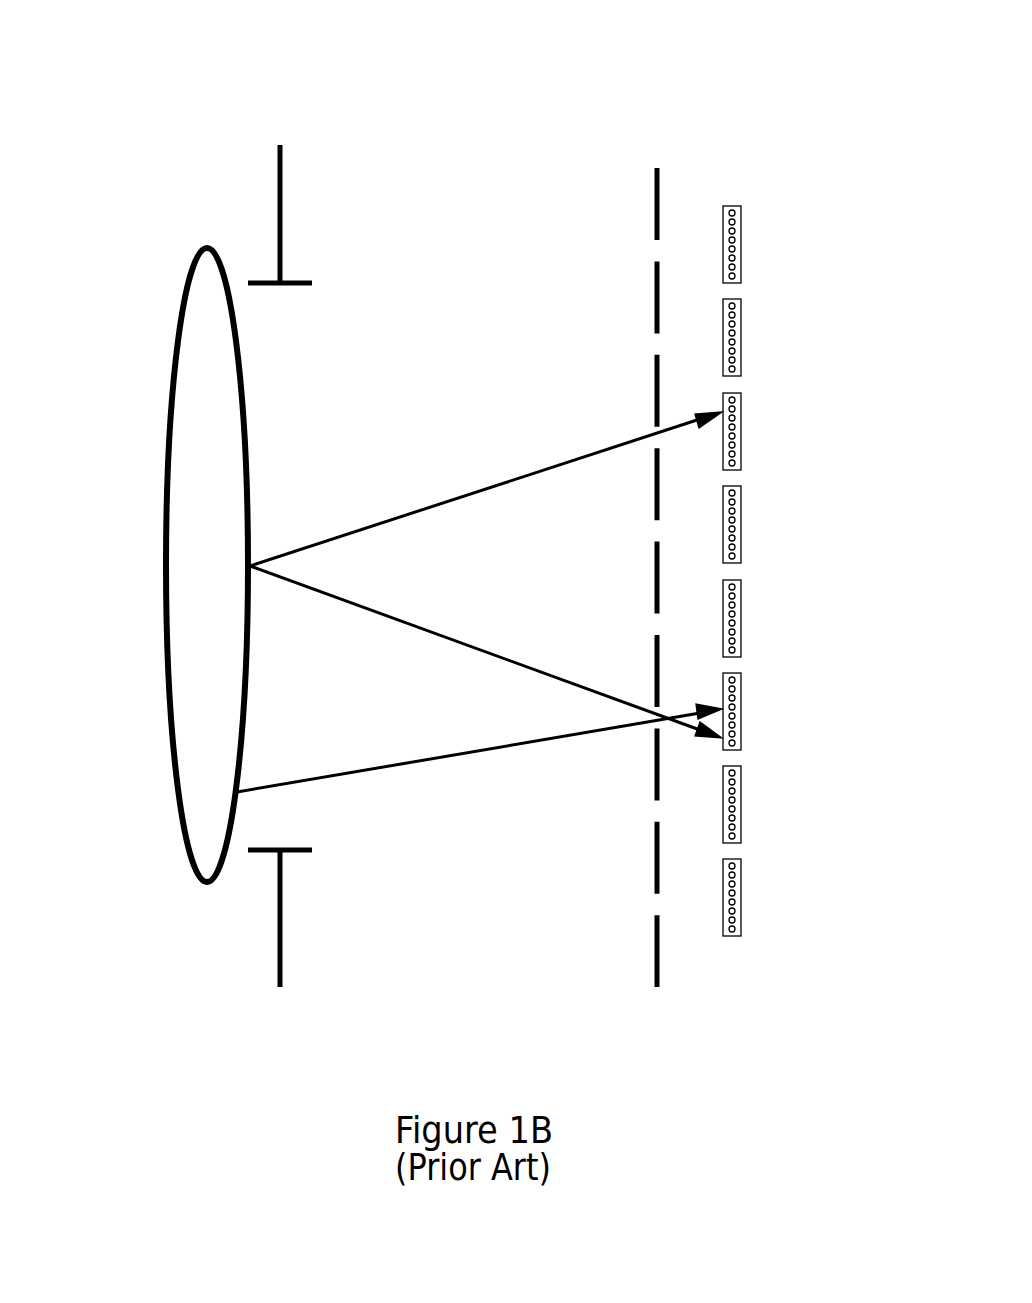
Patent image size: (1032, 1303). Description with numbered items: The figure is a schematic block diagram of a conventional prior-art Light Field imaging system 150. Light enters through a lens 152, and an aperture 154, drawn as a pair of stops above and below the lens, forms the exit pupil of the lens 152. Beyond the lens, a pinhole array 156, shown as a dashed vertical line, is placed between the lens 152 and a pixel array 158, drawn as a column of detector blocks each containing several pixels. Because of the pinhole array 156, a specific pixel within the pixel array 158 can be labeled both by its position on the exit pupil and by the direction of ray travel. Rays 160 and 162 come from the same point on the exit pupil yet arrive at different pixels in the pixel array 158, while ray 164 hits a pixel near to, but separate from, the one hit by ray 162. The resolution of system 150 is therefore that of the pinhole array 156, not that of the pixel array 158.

The Light Field imaging system 150 is at (470, 44).
The lens 152 is at (205, 375).
The aperture 154 is at (280, 212).
The pinhole array 156 is at (657, 195).
The pixel array 158 is at (733, 240).
The ray 160 is at (486, 489).
The ray 162 is at (486, 652).
The ray 164 is at (479, 748).